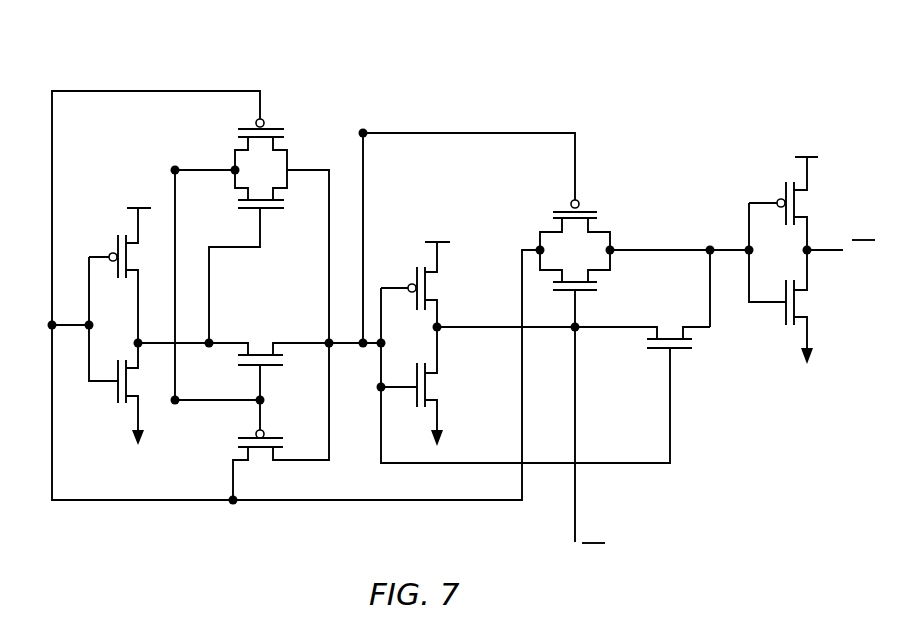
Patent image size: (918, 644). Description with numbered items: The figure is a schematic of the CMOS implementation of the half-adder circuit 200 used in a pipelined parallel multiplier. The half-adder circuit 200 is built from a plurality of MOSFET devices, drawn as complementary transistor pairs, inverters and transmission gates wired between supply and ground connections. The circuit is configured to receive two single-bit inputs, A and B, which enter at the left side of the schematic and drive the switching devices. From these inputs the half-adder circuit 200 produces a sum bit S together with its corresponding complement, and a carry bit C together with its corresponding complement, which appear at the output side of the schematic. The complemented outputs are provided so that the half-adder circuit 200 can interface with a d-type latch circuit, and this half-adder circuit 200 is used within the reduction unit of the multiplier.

The half-adder circuit 200 is at (523, 54).
The single-bit input A is at (52, 325).
The single-bit input B is at (175, 170).
The sum bit S is at (363, 133).
The carry bit C is at (710, 250).